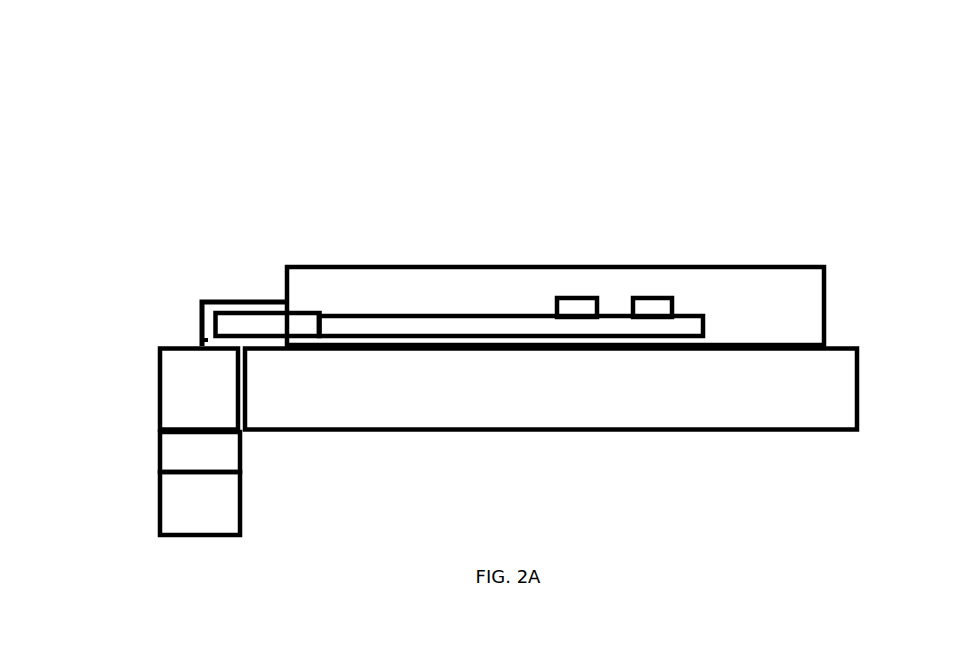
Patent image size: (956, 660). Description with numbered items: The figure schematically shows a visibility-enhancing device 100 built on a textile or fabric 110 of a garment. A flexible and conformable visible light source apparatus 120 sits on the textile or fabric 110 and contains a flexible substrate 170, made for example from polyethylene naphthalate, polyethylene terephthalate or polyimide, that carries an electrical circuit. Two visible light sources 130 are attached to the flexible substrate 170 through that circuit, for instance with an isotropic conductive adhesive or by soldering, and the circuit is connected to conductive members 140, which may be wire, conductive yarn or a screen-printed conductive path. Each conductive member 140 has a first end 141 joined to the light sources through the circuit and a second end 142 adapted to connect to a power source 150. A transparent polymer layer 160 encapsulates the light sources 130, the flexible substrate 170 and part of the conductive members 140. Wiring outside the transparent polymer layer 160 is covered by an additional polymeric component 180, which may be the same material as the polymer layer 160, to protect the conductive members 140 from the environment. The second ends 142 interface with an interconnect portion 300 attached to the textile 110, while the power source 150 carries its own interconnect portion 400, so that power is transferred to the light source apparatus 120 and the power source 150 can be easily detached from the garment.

The visibility-enhancing device 100 is at (846, 154).
The textile or fabric 110 is at (551, 389).
The flexible and conformable visible light source apparatus 120 is at (595, 306).
The visible light source 130 is at (642, 295).
The conductive members 140 is at (223, 313).
The first end 141 is at (319, 313).
The second end 142 is at (208, 340).
The power source 150 is at (200, 503).
The transparent polymer layer 160 is at (542, 319).
The flexible substrate 170 is at (414, 318).
The additional polymeric component 180 is at (202, 301).
The interconnect portion 300 is at (199, 389).
The interconnect portion 400 is at (200, 452).